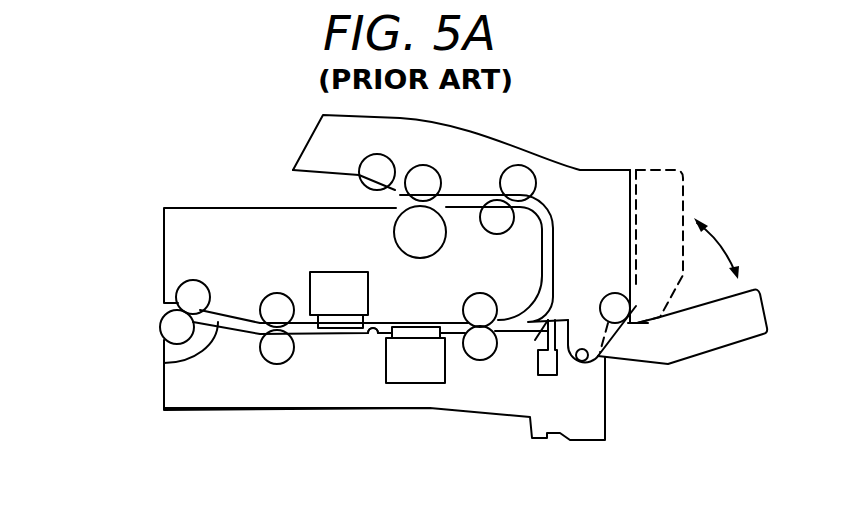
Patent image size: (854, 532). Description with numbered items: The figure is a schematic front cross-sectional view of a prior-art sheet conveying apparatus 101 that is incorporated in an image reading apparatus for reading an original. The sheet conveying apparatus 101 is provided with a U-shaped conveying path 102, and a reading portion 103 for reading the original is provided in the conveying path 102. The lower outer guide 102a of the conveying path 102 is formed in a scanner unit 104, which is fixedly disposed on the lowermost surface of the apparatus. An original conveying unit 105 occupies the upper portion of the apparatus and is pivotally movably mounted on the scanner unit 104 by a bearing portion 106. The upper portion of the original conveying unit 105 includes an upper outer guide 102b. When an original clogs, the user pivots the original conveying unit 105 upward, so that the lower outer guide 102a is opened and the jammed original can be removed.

The sheet conveying apparatus 101 is at (132, 315).
The conveying path 102 is at (166, 363).
The lower outer guide 102a is at (376, 332).
The upper outer guide 102b is at (350, 192).
The reading portion 103 is at (421, 368).
The scanner unit 104 is at (203, 393).
The original conveying unit 105 is at (145, 227).
The bearing portion 106 is at (598, 357).